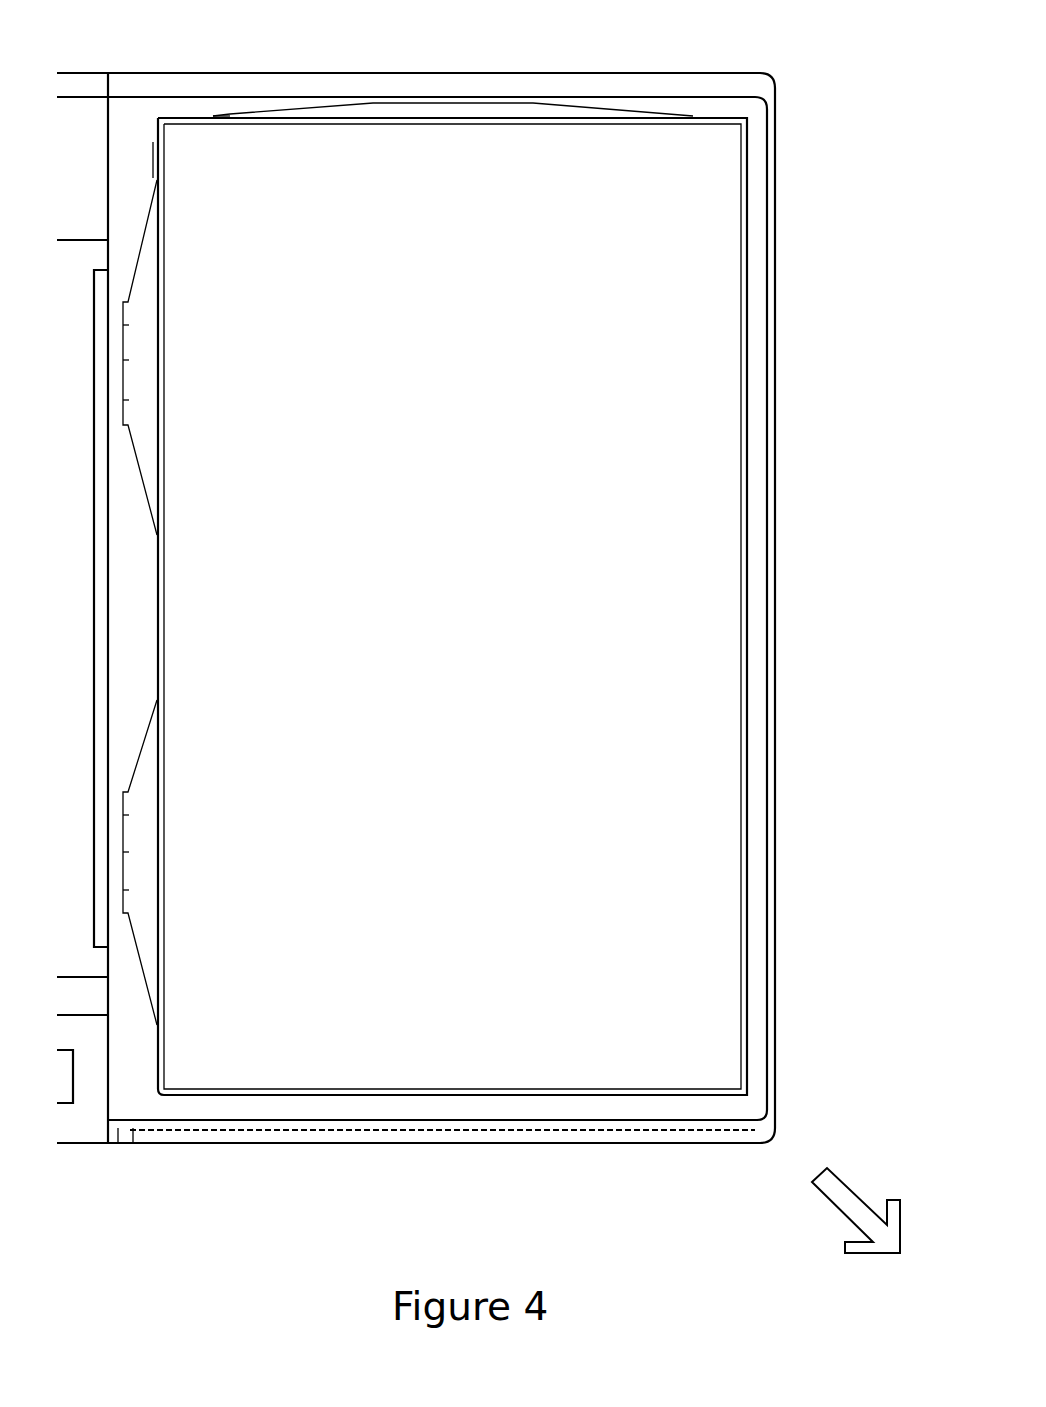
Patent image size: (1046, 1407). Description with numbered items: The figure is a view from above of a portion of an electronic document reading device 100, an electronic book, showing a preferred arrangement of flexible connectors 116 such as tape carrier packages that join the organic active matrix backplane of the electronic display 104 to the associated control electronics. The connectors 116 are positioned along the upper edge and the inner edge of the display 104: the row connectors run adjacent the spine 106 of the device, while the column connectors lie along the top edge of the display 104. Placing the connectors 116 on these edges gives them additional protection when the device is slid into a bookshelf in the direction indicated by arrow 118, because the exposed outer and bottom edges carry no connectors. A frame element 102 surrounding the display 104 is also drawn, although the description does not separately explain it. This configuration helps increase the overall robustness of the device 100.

The electronic document reading device 100 is at (78, 1250).
The frame / bezel 102 is at (450, 62).
The electronic display 104 is at (476, 701).
The spine 106 is at (75, 62).
The flexible connectors 116 is at (480, 112).
The arrow 118 is at (833, 1200).